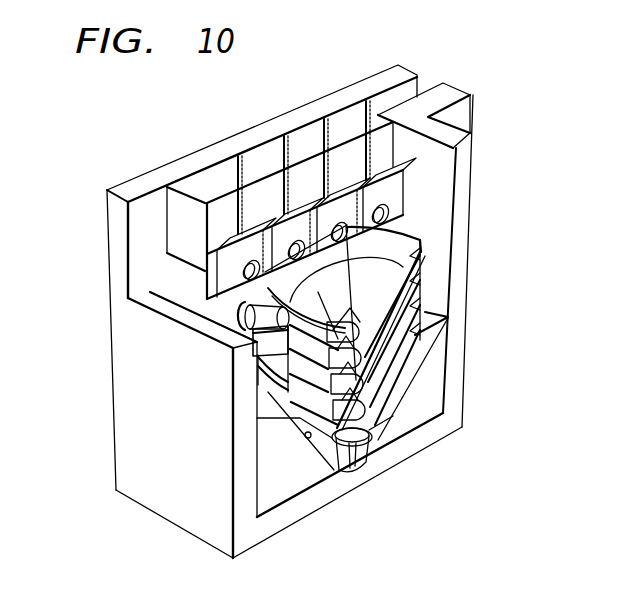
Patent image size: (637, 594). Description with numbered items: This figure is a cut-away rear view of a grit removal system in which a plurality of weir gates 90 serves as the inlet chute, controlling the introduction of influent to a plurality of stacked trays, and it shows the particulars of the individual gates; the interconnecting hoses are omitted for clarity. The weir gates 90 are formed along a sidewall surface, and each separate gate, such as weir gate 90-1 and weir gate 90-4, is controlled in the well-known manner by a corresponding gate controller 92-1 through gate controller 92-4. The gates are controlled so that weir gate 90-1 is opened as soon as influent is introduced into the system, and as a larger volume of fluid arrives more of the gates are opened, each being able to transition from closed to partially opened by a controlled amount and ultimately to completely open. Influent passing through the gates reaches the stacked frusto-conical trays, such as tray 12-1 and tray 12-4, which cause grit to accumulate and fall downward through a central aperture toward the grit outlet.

The weir gates 90 is at (178, 213).
The weir gate 90-1 is at (390, 187).
The weir gate 90-4 is at (204, 266).
The gate controller 92-1 is at (367, 140).
The gate controller 92-4 is at (235, 172).
The stacked tray 12-1 is at (303, 415).
The stacked tray 12-4 is at (433, 237).